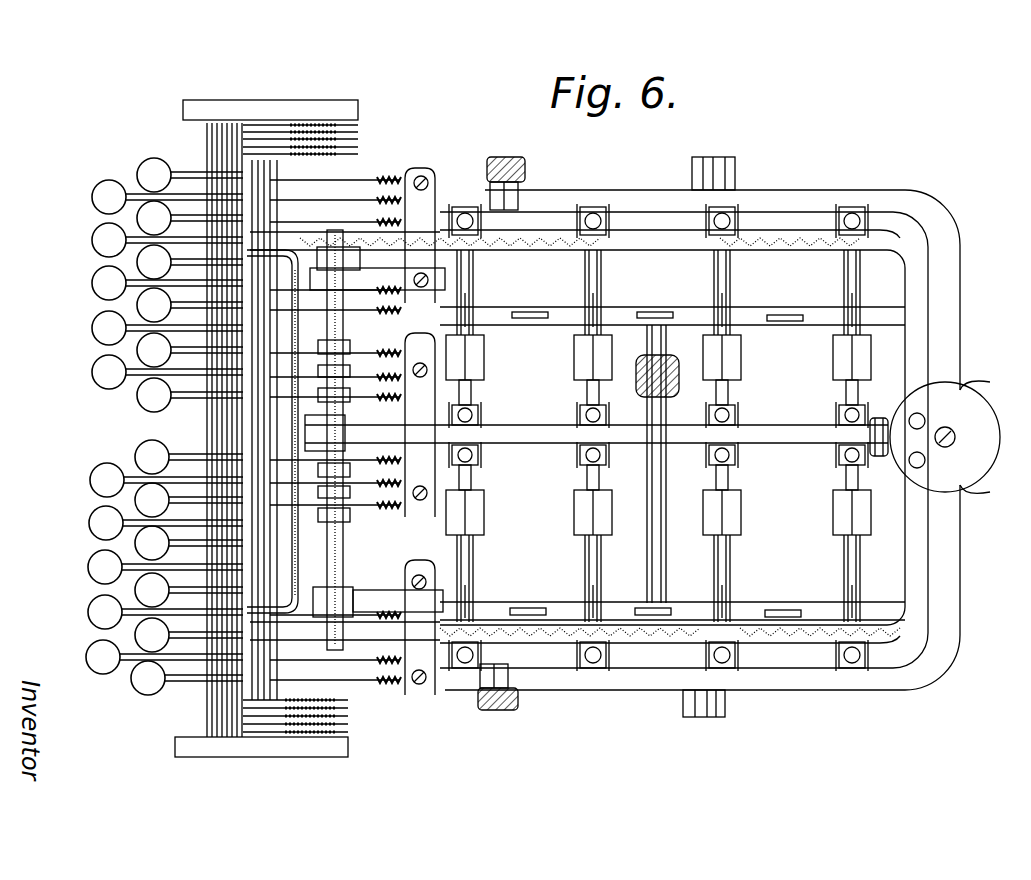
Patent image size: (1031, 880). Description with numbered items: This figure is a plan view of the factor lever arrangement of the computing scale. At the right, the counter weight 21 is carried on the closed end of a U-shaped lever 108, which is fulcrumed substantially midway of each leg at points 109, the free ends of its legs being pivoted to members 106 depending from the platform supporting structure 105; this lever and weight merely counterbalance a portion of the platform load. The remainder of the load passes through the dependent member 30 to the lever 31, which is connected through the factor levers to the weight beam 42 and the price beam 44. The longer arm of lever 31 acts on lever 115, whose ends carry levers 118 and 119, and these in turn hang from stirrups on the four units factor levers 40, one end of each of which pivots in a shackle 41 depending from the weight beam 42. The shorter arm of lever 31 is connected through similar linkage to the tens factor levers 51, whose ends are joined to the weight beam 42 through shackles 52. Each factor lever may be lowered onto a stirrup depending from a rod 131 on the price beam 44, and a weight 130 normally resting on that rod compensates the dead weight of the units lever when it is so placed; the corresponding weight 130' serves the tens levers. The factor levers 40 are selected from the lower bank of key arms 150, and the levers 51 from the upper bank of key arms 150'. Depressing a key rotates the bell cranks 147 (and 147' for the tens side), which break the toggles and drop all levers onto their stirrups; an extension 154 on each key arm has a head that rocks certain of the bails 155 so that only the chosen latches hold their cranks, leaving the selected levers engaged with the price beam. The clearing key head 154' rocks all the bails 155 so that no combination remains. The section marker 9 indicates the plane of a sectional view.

The section line indicator 9 is at (35, 462).
The counter weight 21 is at (962, 412).
The dependent member 30 is at (679, 382).
The lever 31 is at (662, 517).
The factor levers 40 is at (490, 567).
The shackle 41 is at (480, 655).
The weight beam 42 is at (770, 244).
The price beam 44 is at (518, 445).
The factor levers 51 is at (580, 280).
The shackles 52 is at (565, 216).
The platform supporting structure 105 is at (948, 255).
The members 106 is at (522, 172).
The U-shaped lever 108 is at (772, 683).
The points 109 is at (737, 170).
The lever 115 is at (670, 605).
The lever 118 is at (517, 604).
The lever 119 is at (758, 612).
The weight 130 is at (658, 510).
The weight 130' is at (658, 357).
The rod 131 is at (473, 392).
The bell crank 147 is at (261, 741).
The bell crank 147' is at (270, 106).
The key arms 150 is at (164, 578).
The key arms 150' is at (130, 273).
The extension 154 is at (151, 430).
The head 154' is at (309, 377).
The bail 155 is at (217, 157).